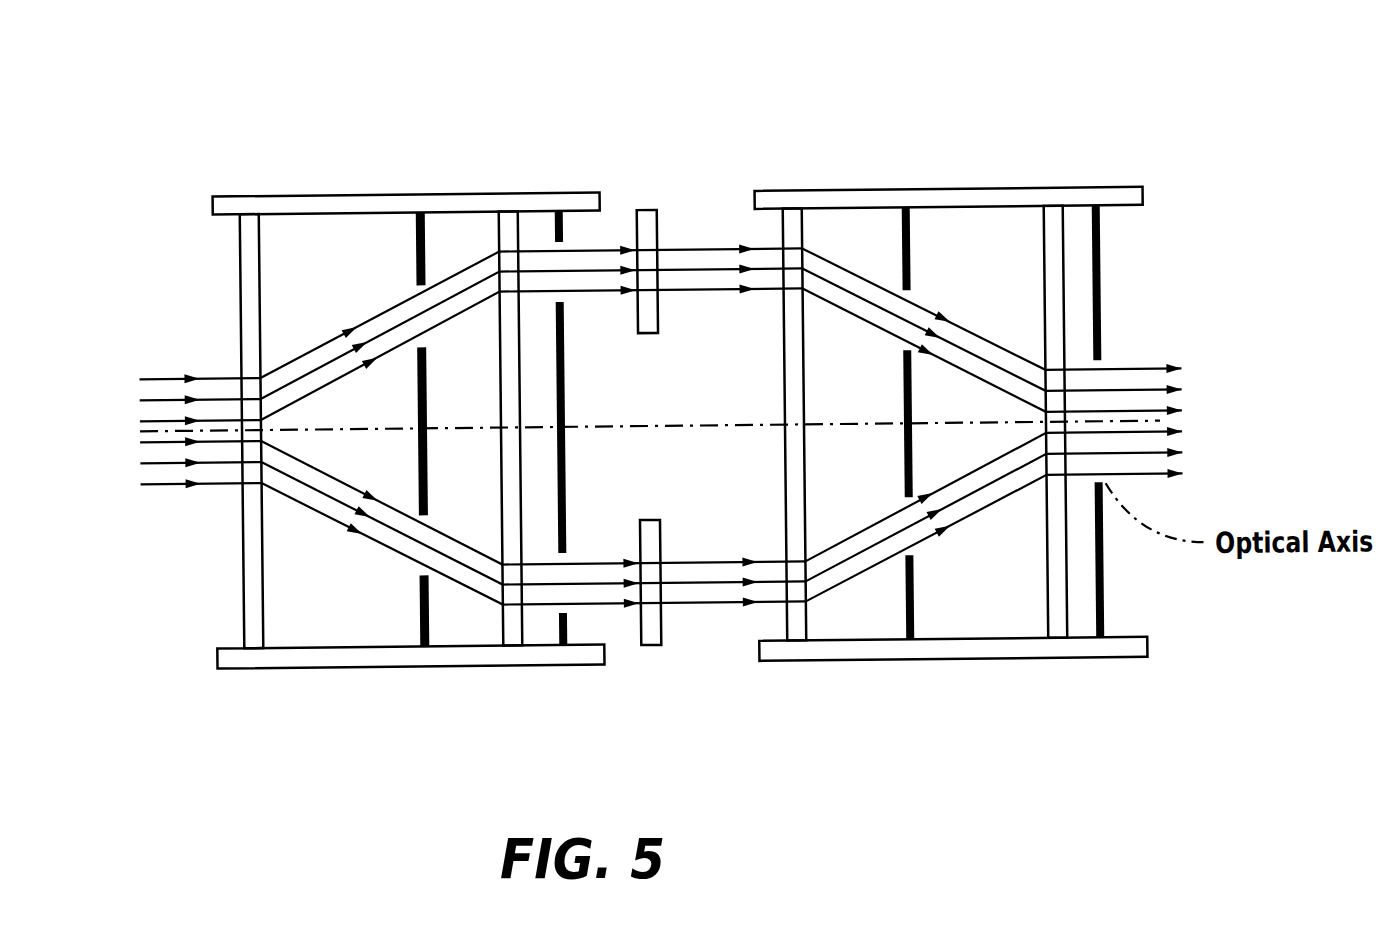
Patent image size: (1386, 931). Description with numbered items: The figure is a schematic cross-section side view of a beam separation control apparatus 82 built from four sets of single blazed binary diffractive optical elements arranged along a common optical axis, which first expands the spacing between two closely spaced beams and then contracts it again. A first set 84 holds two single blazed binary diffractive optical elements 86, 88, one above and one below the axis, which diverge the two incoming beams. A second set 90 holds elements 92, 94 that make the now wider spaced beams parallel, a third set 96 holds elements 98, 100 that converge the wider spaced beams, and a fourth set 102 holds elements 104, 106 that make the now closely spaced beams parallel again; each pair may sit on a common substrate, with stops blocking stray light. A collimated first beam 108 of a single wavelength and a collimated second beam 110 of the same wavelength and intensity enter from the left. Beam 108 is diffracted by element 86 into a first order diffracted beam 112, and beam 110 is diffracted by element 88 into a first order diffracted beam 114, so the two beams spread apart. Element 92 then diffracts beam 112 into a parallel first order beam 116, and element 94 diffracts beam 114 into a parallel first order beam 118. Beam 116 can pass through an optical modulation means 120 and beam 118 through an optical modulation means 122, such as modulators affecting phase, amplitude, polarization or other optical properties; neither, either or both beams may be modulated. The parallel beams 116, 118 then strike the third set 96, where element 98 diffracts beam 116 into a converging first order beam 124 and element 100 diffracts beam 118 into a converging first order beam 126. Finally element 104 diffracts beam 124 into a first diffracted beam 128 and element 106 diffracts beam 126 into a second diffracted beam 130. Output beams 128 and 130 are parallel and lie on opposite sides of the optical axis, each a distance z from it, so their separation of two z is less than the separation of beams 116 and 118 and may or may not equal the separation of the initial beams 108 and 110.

The beam separation control apparatus 82 is at (158, 104).
The first set 84 is at (263, 224).
The single blazed binary diffractive optical element 86 is at (276, 304).
The single blazed binary diffractive optical element 88 is at (279, 590).
The second set 90 is at (538, 224).
The single blazed binary diffractive optical element 92 is at (486, 334).
The single blazed binary diffractive optical element 94 is at (484, 464).
The third set 96 is at (806, 232).
The single blazed binary diffractive optical element 98 is at (816, 369).
The single blazed binary diffractive optical element 100 is at (895, 505).
The fourth set 102 is at (1072, 224).
The single blazed binary diffractive optical element 104 is at (1021, 259).
The single blazed binary diffractive optical element 106 is at (1024, 535).
The first beam 108 is at (163, 372).
The second beam 110 is at (164, 482).
The first order diffracted beam 112 is at (394, 305).
The first order diffracted beam 114 is at (398, 551).
The first order diffracted beam 116 is at (600, 248).
The first order diffracted beam 118 is at (590, 562).
The optical modulation means 120 is at (661, 229).
The optical modulation means 122 is at (660, 624).
The first order diffracted beam 124 is at (848, 314).
The first order diffracted beam 126 is at (856, 536).
The first diffracted beam 128 is at (1139, 372).
The second diffracted beam 130 is at (1140, 481).